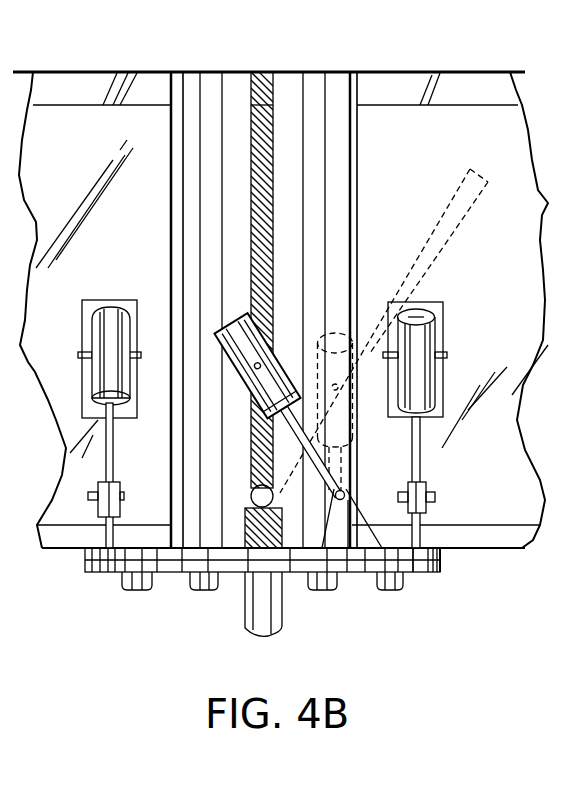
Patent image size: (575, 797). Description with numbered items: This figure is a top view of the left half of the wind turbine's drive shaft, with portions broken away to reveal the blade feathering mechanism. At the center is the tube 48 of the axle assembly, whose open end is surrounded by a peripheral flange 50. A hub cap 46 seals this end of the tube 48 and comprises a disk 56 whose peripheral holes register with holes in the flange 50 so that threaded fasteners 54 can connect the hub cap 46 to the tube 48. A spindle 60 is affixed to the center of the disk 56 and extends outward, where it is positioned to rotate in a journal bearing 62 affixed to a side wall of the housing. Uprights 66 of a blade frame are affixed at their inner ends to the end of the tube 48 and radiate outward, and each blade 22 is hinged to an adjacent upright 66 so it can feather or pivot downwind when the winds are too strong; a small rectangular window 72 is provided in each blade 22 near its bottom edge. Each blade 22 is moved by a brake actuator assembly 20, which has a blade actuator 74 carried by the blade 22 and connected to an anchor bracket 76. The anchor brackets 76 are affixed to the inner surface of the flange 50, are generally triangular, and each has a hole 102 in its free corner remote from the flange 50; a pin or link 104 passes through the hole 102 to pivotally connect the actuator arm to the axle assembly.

The brake actuator assembly 20 is at (117, 270).
The blade 22 is at (50, 117).
The hub cap 46 is at (70, 585).
The tube 48 is at (347, 147).
The peripheral flange 50 is at (442, 557).
The threaded fastener 54 is at (137, 588).
The disk 56 is at (417, 575).
The spindle 60 is at (250, 612).
The journal bearing 62 is at (47, 533).
The upright 66 is at (510, 542).
The window 72 is at (98, 425).
The blade actuator 74 is at (272, 352).
The anchor bracket 76 is at (90, 513).
The hole 102 is at (348, 552).
The pin or link 104 is at (127, 513).